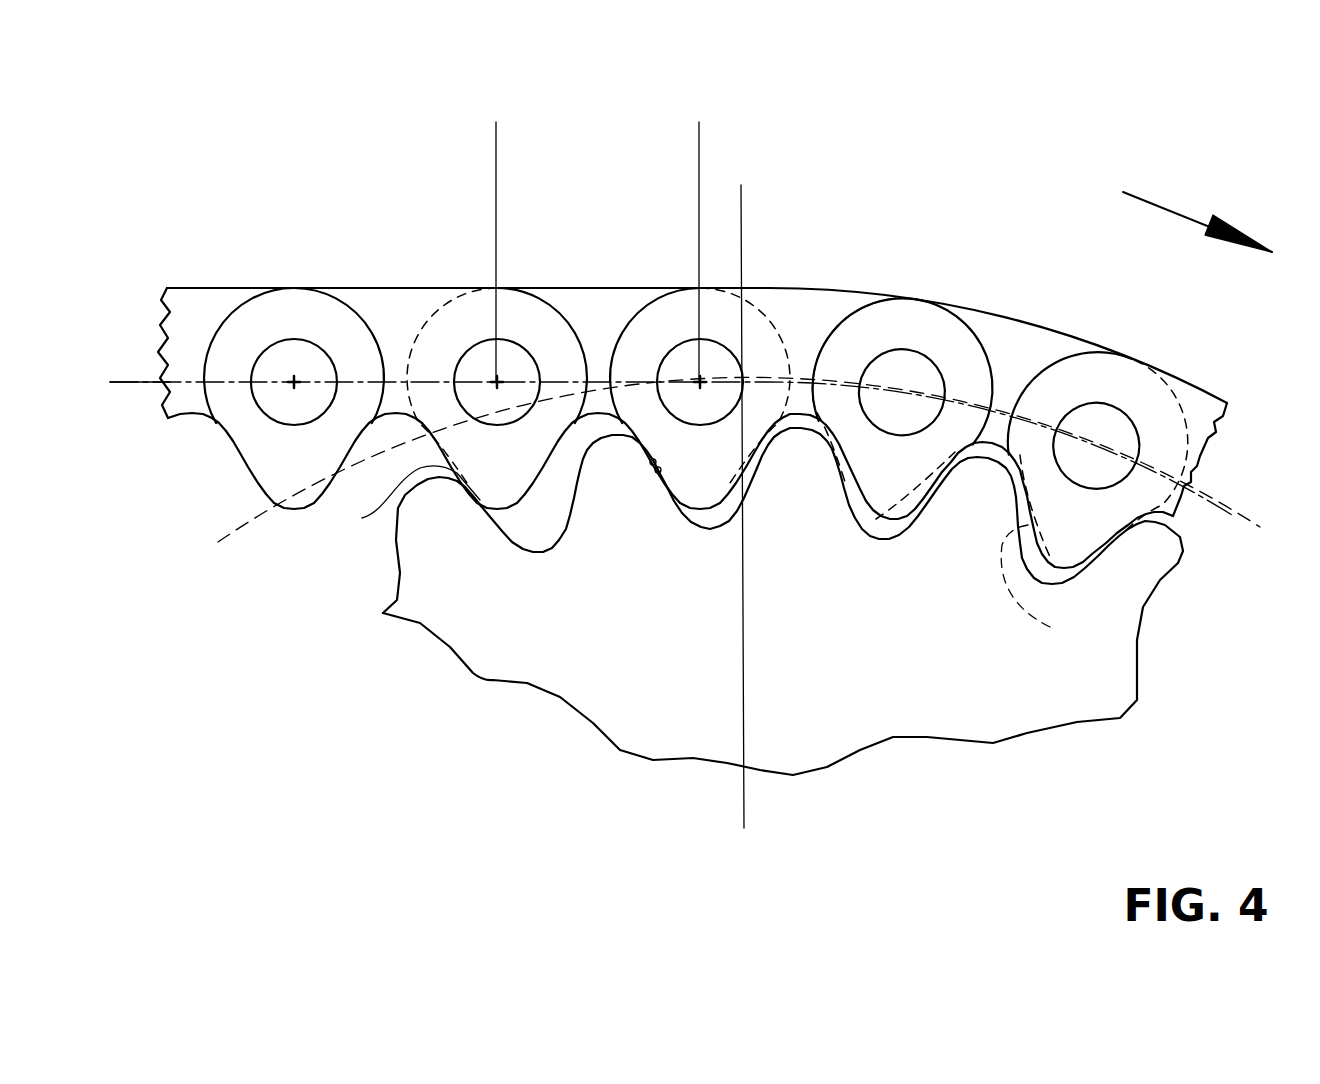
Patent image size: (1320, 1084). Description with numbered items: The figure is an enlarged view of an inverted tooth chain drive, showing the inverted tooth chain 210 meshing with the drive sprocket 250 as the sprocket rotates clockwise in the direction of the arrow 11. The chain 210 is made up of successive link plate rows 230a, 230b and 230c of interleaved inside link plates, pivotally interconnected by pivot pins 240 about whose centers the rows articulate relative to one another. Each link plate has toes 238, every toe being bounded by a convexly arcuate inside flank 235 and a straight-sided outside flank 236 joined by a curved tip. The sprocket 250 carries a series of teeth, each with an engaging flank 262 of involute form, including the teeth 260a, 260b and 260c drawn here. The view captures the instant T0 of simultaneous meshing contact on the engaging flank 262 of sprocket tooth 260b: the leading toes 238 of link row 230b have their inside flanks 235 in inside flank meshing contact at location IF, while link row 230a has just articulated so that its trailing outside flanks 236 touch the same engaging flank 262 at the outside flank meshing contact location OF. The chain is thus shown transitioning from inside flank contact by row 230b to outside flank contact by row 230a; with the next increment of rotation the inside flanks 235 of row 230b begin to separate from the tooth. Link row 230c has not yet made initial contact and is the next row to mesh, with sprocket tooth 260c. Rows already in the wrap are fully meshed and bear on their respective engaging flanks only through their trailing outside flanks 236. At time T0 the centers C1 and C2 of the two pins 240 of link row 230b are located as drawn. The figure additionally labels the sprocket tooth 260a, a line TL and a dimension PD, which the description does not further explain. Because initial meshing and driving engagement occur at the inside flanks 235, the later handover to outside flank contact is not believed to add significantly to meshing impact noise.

The arrow 11 is at (1148, 198).
The inverted tooth chain 210 is at (843, 182).
The link plate row 230a is at (848, 310).
The link plate row 230b is at (605, 330).
The link plate row 230c is at (387, 305).
The inside flank 235 is at (248, 468).
The outside flank 236 is at (212, 420).
The toe 238 is at (703, 457).
The pivot pin 240 is at (1098, 428).
The drive sprocket 250 is at (493, 642).
The sprocket tooth 260a is at (786, 503).
The sprocket tooth 260b is at (590, 537).
The sprocket tooth 260c is at (433, 555).
The engaging flank 262 is at (703, 530).
The pin center C1 is at (700, 380).
The pin center C2 is at (497, 380).
The time of simultaneous contact T0 is at (596, 235).
The tangent line TL is at (133, 392).
The pitch diameter PD is at (1248, 522).
The inside flank meshing contact IF is at (651, 465).
The outside flank meshing contact OF is at (658, 474).